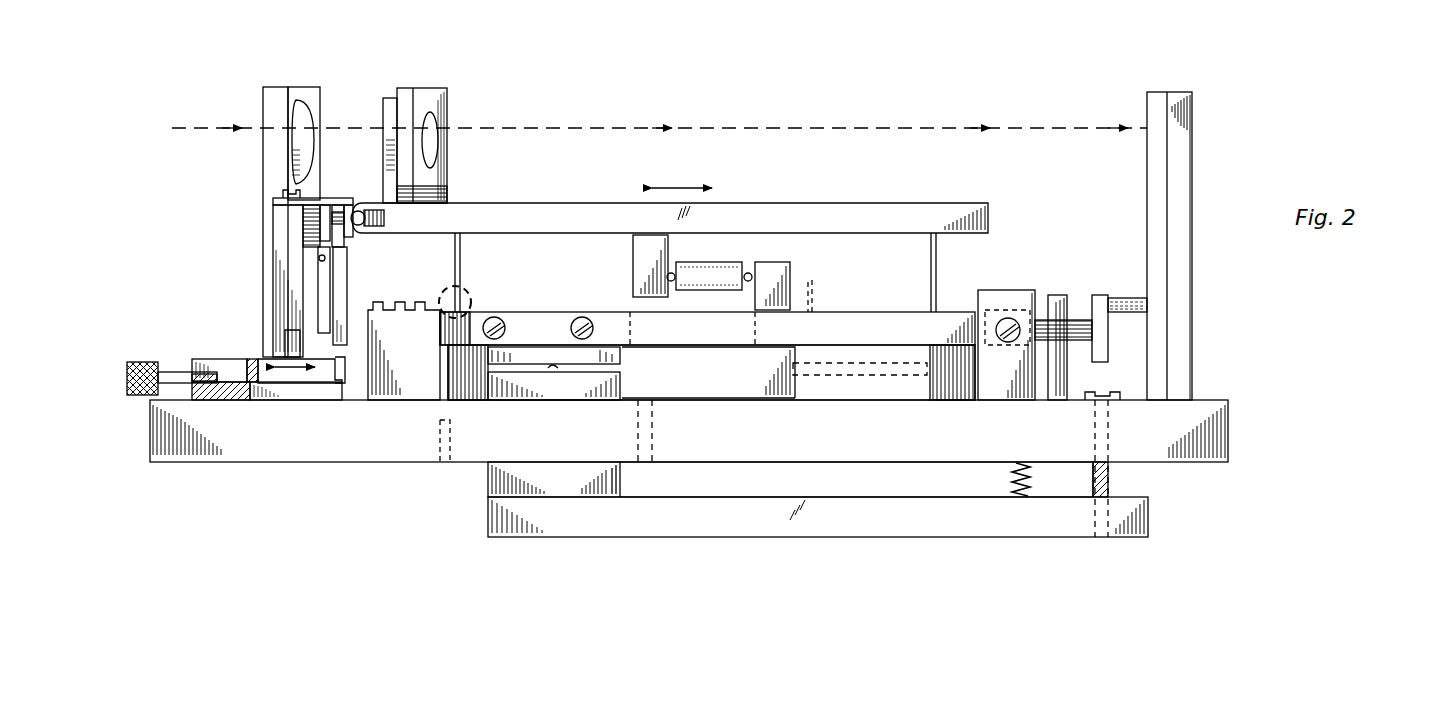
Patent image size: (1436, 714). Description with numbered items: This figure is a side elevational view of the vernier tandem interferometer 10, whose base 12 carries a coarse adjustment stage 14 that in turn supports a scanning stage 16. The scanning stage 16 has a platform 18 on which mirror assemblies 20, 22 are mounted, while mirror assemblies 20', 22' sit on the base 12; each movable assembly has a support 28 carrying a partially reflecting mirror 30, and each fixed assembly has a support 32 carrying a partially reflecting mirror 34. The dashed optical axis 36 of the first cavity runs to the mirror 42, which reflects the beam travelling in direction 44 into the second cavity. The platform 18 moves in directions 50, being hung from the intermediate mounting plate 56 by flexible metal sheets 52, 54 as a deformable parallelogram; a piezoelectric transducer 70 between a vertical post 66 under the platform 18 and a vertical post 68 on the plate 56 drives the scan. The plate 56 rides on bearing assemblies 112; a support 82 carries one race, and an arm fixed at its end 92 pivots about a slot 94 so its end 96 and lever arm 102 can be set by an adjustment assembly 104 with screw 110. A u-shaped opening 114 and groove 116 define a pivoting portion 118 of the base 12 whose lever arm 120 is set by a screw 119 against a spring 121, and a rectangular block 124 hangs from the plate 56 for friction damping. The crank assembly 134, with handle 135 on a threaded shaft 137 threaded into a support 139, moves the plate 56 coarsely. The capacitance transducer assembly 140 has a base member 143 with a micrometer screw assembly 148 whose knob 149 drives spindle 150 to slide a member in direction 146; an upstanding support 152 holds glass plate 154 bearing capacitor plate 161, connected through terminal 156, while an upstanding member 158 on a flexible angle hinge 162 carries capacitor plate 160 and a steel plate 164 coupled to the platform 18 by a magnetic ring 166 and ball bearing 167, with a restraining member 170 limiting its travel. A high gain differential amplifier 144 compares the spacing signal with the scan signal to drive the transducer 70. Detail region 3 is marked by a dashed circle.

The vernier tandem interferometer 10 is at (643, 92).
The base 12 is at (1240, 400).
The coarse adjustment stage 14 is at (1061, 306).
The scanning stage 16 is at (670, 292).
The platform 18 is at (572, 200).
The mirror assembly 20 is at (426, 112).
The mirror assembly 20' is at (258, 201).
The mirror assembly 22 is at (428, 112).
The mirror assembly 22' is at (284, 193).
The support 28 is at (446, 106).
The partially reflecting mirror 30 is at (383, 104).
The support 32 is at (272, 88).
The partially reflecting mirror 34 is at (310, 92).
The optical axis 36 is at (700, 128).
The mirror 42 is at (1193, 196).
The direction 44 is at (984, 126).
The direction 50 is at (672, 184).
The flexible metal sheet 52 is at (932, 262).
The flexible metal sheet 54 is at (461, 257).
The intermediate mounting plate 56 is at (820, 288).
The vertical post 66 is at (632, 260).
The vertical post 68 is at (790, 264).
The piezoelectric transducer 70 is at (722, 258).
The support 82 is at (782, 400).
The end 92 is at (400, 306).
The slot 94 is at (448, 332).
The end 96 is at (554, 322).
The lever arm 102 is at (896, 338).
The adjustment assembly 104 is at (1006, 315).
The screw 110 is at (1010, 344).
The bearing assembly 112 is at (560, 400).
The u-shaped opening 114 is at (650, 428).
The groove 116 is at (430, 460).
The portion 118 is at (478, 460).
The screw 119 is at (1110, 478).
The lever arm 120 is at (905, 498).
The spring 121 is at (1010, 478).
The rectangular block 124 is at (711, 395).
The crank assembly 134 is at (1123, 297).
The handle 135 is at (1128, 314).
The threaded shaft 137 is at (1080, 342).
The support 139 is at (1052, 292).
The capacitance transducer assembly 140 is at (281, 384).
The base member 143 is at (278, 400).
The high gain differential amplifier 144 is at (212, 358).
The direction 146 is at (296, 396).
The micrometer screw assembly 148 is at (164, 338).
The knob 149 is at (148, 362).
The spindle 150 is at (222, 400).
The upstanding support 152 is at (285, 260).
The glass plate 154 is at (314, 206).
The terminal 156 is at (326, 262).
The upstanding member 158 is at (338, 318).
The capacitor plate 160 is at (338, 206).
The capacitor plate 161 is at (330, 228).
The flexible angle hinge 162 is at (300, 382).
The steel plate 164 is at (347, 236).
The magnetic ring 166 is at (362, 230).
The ball bearing 167 is at (444, 190).
The restraining member 170 is at (290, 190).
The detail region 3 is at (470, 302).